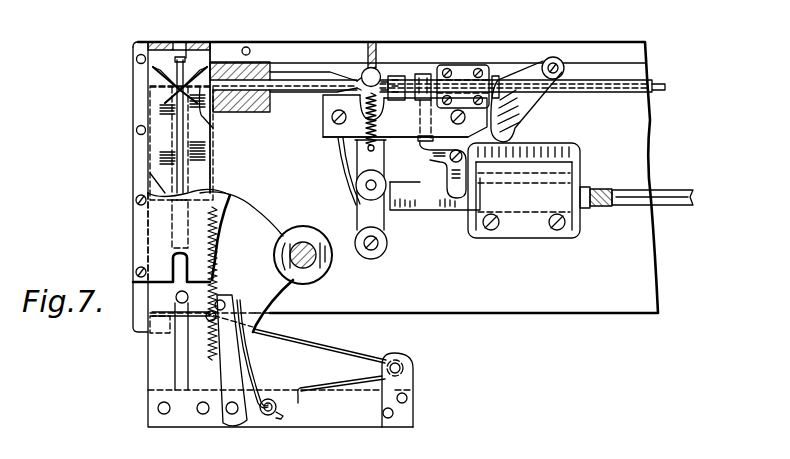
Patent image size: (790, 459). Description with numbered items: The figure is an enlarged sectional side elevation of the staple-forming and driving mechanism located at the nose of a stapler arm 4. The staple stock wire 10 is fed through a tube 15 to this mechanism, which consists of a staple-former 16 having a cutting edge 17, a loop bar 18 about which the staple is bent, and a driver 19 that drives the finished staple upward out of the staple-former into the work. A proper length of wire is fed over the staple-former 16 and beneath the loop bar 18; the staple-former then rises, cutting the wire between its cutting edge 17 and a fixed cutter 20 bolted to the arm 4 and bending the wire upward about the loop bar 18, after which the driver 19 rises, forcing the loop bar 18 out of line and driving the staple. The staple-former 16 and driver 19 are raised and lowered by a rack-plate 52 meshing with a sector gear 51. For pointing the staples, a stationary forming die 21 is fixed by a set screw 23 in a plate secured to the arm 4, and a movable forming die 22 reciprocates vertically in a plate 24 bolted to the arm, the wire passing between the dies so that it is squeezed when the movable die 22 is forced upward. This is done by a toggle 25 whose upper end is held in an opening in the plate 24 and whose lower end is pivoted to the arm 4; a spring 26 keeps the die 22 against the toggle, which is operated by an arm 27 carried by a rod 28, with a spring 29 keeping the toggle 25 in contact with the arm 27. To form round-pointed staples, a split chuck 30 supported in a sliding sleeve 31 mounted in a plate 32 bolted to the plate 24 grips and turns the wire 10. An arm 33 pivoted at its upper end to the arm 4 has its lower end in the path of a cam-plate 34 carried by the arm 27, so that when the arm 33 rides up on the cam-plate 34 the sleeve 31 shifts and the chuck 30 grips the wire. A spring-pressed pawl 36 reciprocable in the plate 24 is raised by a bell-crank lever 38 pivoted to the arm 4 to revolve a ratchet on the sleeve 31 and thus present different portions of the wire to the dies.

The stapler arm 4 is at (542, 302).
The staple stock wire 10 is at (660, 86).
The tube 15 is at (611, 95).
The staple-former 16 is at (157, 146).
The cutting edge 17 is at (213, 128).
The loop bar 18 is at (175, 60).
The driver 19 is at (177, 127).
The fixed cutter 20 is at (247, 60).
The stationary forming die 21 is at (379, 72).
The movable forming die 22 is at (333, 128).
The set screw 23 is at (370, 46).
The plate 24 is at (325, 100).
The toggle 25 is at (362, 165).
The spring 26 is at (360, 160).
The arm 27 is at (425, 208).
The rod 28 is at (620, 199).
The spring 29 is at (365, 148).
The split chuck 30 is at (407, 75).
The sliding sleeve 31 is at (550, 65).
The plate 32 is at (450, 70).
The arm 33 is at (527, 112).
The cam-plate 34 is at (560, 148).
The spring-pressed pawl 36 is at (420, 118).
The bell-crank lever 38 is at (445, 168).
The sector gear 51 is at (252, 232).
The rack-plate 52 is at (157, 232).